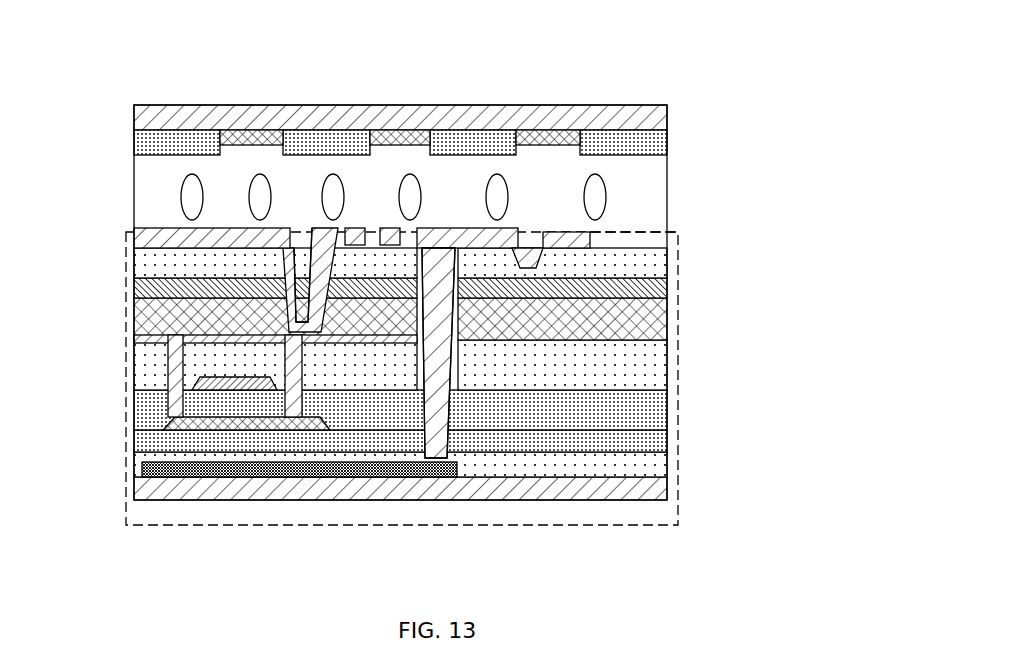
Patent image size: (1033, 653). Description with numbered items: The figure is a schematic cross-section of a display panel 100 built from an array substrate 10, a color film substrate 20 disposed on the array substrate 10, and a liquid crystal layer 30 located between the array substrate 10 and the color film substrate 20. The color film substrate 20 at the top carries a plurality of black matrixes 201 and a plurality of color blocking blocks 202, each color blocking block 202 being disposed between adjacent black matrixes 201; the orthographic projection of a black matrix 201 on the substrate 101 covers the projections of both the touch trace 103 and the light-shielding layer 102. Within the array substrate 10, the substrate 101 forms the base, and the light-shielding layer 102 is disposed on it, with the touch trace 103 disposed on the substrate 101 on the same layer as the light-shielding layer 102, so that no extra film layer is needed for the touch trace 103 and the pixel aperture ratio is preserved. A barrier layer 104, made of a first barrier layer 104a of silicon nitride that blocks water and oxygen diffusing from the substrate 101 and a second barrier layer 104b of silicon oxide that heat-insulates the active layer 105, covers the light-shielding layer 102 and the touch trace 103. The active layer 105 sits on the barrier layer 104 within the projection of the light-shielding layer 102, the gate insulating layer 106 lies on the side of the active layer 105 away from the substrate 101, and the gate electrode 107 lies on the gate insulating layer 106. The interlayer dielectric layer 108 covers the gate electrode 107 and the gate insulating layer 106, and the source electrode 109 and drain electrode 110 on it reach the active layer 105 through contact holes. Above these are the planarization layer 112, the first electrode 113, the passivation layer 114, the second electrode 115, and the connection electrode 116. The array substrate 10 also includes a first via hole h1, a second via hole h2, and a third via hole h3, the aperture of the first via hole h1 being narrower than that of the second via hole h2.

The display panel 100 is at (690, 52).
The array substrate 10 is at (115, 497).
The color film substrate 20 is at (555, 44).
The black matrix 201 is at (546, 130).
The color blocking block 202 is at (470, 130).
The liquid crystal layer 30 is at (662, 192).
The substrate 101 is at (668, 487).
The light-shielding layer 102 is at (242, 478).
The touch trace 103 is at (425, 470).
The barrier layer 104 is at (474, 456).
The first barrier layer 104a is at (668, 464).
The second barrier layer 104b is at (668, 438).
The active layer 105 is at (165, 425).
The gate insulating layer 106 is at (668, 404).
The gate electrode 107 is at (195, 385).
The interlayer dielectric layer 108 is at (668, 366).
The source electrode 109 is at (283, 338).
The drain electrode 110 is at (322, 323).
The planarization layer 112 is at (668, 320).
The first electrode 113 is at (668, 286).
The passivation layer 114 is at (668, 252).
The second electrode 115 is at (142, 244).
The connection electrode 116 is at (668, 236).
The first via hole h1 is at (322, 324).
The second via hole h2 is at (428, 425).
The third via hole h3 is at (535, 268).